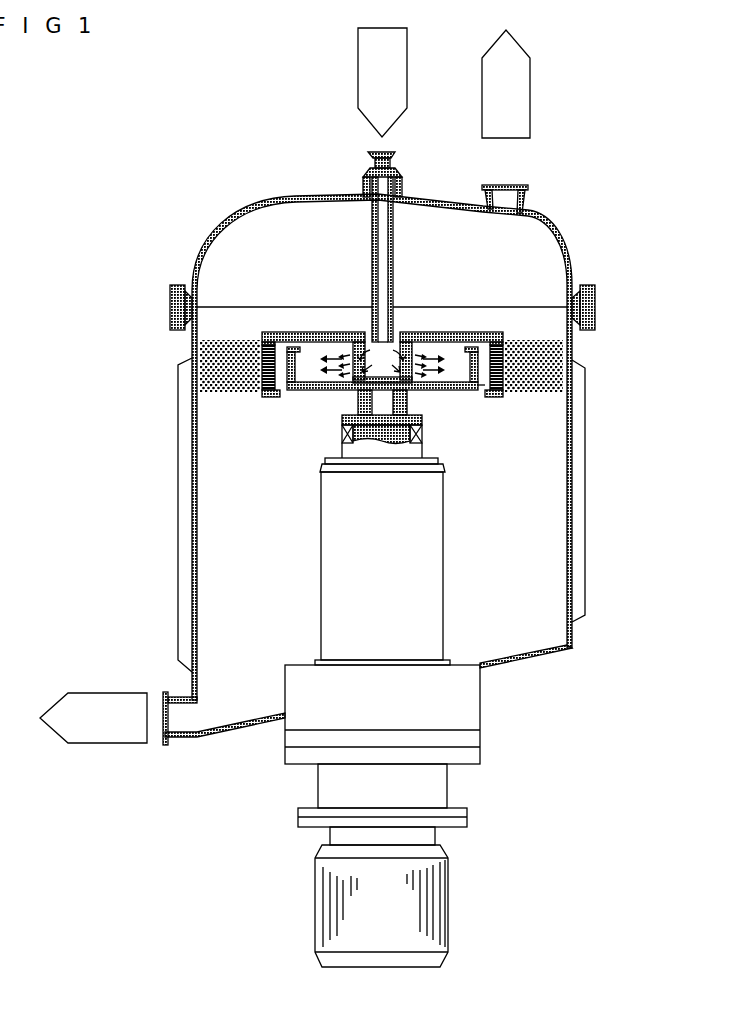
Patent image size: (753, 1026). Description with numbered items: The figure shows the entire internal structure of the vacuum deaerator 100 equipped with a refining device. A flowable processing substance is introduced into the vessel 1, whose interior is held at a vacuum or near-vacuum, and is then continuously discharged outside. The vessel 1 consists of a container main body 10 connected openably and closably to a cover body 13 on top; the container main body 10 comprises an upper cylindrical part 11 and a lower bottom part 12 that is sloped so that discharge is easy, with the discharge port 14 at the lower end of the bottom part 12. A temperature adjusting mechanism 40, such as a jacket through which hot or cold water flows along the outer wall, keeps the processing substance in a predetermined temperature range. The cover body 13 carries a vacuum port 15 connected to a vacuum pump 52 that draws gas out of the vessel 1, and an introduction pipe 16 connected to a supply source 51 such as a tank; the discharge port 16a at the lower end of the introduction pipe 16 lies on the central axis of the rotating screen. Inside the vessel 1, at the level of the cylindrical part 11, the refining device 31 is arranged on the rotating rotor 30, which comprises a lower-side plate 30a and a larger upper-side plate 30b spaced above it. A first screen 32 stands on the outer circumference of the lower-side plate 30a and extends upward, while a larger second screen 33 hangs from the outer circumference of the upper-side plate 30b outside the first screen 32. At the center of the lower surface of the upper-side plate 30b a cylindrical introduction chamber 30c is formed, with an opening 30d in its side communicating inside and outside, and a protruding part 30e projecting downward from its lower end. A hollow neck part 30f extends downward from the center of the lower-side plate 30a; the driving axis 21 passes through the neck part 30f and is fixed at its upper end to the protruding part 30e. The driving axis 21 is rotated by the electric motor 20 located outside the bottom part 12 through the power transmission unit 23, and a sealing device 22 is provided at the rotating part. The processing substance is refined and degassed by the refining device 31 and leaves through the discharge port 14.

The vessel 1 is at (252, 727).
The container main body 10 is at (608, 510).
The cylindrical part 11 is at (578, 356).
The bottom part 12 is at (580, 582).
The cover body 13 is at (574, 275).
The discharge port 14 is at (165, 737).
The vacuum port 15 is at (527, 207).
The introduction pipe 16 is at (371, 253).
The discharge port of introduction pipe 16a is at (412, 365).
The electric motor for rotor 20 is at (447, 890).
The driving axis 21 is at (344, 437).
The sealing device 22 is at (423, 433).
The power transmission unit for rotor 23 is at (330, 583).
The rotating rotor 30 is at (357, 309).
The lower-side plate 30a is at (366, 392).
The upper-side plate 30b is at (452, 333).
The introduction chamber 30c is at (413, 350).
The opening 30d is at (342, 380).
The protruding part 30e is at (378, 413).
The neck part 30f is at (425, 410).
The refining device 31 is at (266, 394).
The first screen 32 is at (295, 382).
The second screen 33 is at (263, 360).
The temperature adjusting mechanism 40 is at (178, 562).
The supply source 51 is at (372, 98).
The vacuum pump 52 is at (496, 118).
The deaerator 100 is at (223, 197).